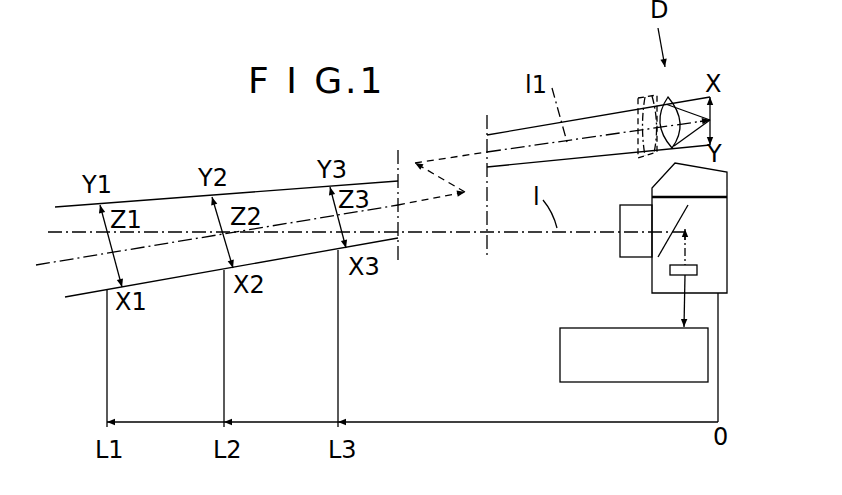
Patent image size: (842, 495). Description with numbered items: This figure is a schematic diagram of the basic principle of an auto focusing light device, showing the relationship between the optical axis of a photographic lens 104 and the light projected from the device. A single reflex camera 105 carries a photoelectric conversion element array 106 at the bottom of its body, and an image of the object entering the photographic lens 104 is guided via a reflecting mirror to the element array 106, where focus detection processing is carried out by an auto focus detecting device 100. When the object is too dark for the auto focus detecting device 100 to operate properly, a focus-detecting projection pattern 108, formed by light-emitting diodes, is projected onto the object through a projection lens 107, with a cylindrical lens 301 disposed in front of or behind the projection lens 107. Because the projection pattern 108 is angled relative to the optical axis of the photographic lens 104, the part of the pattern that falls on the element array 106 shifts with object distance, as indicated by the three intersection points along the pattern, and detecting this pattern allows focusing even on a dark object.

The auto focus detecting device 100 is at (560, 358).
The photographic lens 104 is at (627, 243).
The single reflex camera 105 is at (717, 180).
The photoelectric conversion element array 106 is at (697, 271).
The projection lens 107 is at (667, 128).
The focus-detecting projection pattern 108 is at (712, 117).
The cylindrical lens 301 is at (633, 100).